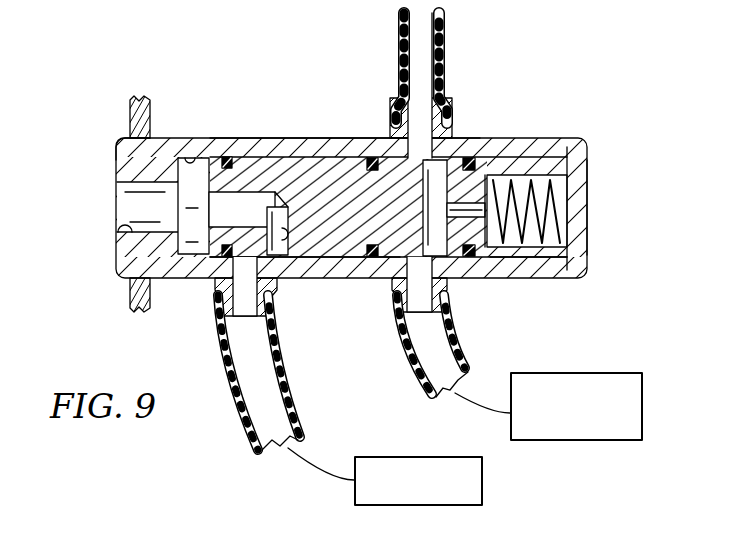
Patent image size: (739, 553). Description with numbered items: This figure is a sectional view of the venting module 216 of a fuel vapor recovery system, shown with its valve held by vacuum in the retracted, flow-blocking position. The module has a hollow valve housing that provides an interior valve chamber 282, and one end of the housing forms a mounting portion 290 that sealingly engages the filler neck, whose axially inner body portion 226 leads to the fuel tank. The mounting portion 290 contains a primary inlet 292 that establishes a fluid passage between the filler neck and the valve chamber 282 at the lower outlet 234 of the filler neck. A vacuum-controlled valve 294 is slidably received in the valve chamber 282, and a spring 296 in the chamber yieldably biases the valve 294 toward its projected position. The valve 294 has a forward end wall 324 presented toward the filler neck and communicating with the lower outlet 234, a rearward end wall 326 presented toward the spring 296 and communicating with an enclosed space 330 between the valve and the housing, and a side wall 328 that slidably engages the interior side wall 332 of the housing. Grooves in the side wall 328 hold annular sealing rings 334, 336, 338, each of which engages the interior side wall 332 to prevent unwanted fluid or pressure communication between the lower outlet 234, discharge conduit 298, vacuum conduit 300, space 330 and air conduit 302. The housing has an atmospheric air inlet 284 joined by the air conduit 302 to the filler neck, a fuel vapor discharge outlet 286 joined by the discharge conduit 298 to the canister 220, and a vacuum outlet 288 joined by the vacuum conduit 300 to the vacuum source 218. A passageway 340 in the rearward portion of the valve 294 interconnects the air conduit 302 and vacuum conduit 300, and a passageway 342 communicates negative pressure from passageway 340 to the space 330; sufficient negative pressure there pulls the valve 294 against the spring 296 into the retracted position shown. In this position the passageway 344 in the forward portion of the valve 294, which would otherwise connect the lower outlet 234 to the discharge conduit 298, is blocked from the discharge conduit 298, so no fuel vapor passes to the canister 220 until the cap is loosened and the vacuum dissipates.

The venting module 216 is at (625, 138).
The vacuum source 218 is at (584, 373).
The canister 220 is at (401, 457).
The body portion 226 is at (147, 113).
The lower outlet 234 is at (102, 256).
The valve chamber 282 is at (192, 160).
The atmospheric air inlet 284 is at (395, 100).
The fuel vapor discharge outlet 286 is at (275, 326).
The vacuum outlet 288 is at (398, 282).
The mounting portion 290 is at (125, 150).
The primary inlet 292 is at (117, 229).
The vacuum-controlled valve 294 is at (283, 160).
The spring 296 is at (545, 200).
The discharge conduit 298 is at (276, 380).
The vacuum conduit 300 is at (457, 364).
The air conduit 302 is at (445, 40).
The forward end wall 324 is at (208, 176).
The rearward end wall 326 is at (501, 159).
The side wall 328 is at (324, 156).
The enclosed space 330 is at (537, 180).
The interior side wall 332 is at (548, 262).
The annular sealing ring 334 is at (228, 158).
The annular sealing ring 336 is at (371, 158).
The annular sealing ring 338 is at (468, 258).
The passageway 340 is at (441, 168).
The passageway 342 is at (492, 238).
The passageway 344 is at (314, 262).